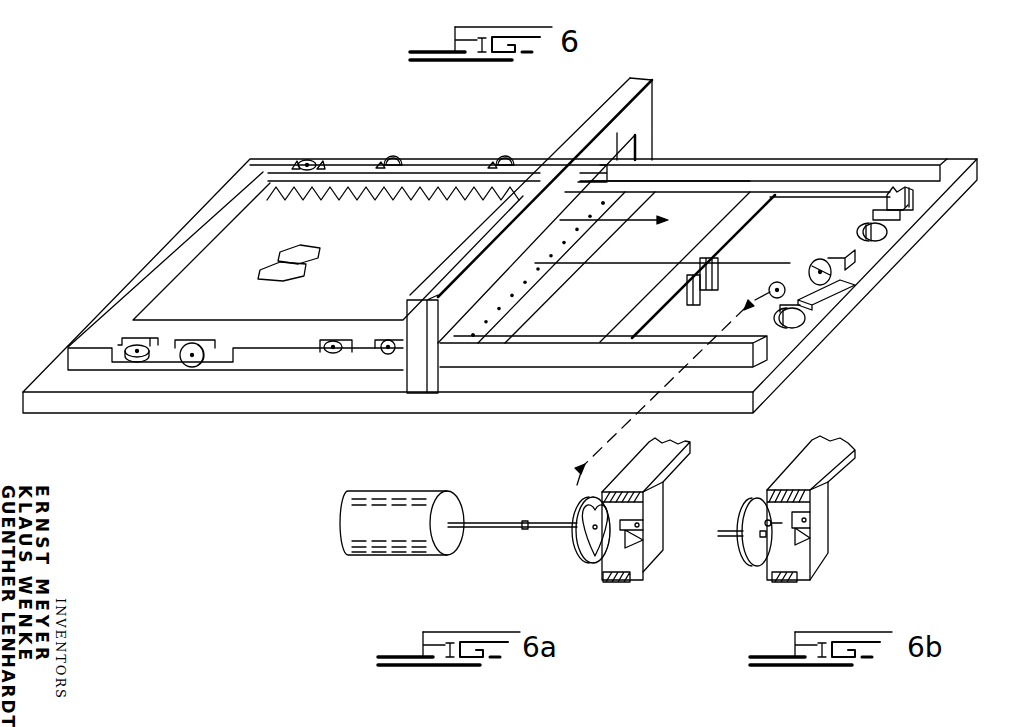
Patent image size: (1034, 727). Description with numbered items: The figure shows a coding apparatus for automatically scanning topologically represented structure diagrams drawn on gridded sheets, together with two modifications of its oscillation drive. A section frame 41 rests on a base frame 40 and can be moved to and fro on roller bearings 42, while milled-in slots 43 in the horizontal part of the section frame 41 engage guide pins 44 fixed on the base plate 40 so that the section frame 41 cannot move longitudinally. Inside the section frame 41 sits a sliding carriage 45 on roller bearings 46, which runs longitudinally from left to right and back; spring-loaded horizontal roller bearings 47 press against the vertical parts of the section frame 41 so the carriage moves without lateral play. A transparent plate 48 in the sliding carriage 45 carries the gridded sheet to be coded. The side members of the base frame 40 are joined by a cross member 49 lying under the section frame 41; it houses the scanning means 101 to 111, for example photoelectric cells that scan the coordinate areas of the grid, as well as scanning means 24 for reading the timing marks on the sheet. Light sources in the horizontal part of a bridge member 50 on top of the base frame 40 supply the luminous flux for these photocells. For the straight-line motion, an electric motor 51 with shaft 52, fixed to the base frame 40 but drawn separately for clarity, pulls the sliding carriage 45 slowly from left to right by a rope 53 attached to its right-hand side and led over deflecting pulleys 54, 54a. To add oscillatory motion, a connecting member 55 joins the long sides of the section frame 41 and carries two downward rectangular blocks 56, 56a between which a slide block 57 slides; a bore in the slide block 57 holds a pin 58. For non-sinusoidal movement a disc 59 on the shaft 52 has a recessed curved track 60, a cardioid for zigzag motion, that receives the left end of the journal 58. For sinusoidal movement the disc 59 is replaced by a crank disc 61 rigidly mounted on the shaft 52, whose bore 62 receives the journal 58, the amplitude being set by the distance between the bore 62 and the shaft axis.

In FIG. 6, the scanning means 24 is at (603, 203).
In FIG. 6, the base frame 40 is at (960, 206).
In FIG. 6, the section frame 41 is at (932, 168).
In FIG. 6, the roller bearings 42 is at (887, 232).
In FIG. 6, the milled-in slots 43 is at (897, 188).
In FIG. 6, the guide pins 44 is at (907, 192).
In FIG. 6, the sliding carriage 45 is at (426, 172).
In FIG. 6, the rollers 46 is at (390, 158).
In FIG. 6, the roller bearings 47 is at (312, 160).
In FIG. 6, the transparent plate 48 is at (245, 240).
In FIG. 6, the cross member 49 is at (613, 207).
In FIG. 6, the bridge member 50 is at (597, 119).
In FIG. 6a, the electric motor 51 is at (407, 505).
In FIG. 6a, the shaft 52 is at (497, 530).
In FIG. 6, the rope 53 is at (638, 267).
In FIG. 6a, the rope 53 is at (577, 485).
In FIG. 6, the deflecting pulley 54 is at (832, 278).
In FIG. 6, the deflecting pulley 54a is at (800, 303).
In FIG. 6, the connecting member 55 is at (743, 213).
In FIG. 6a, the connecting member 55 is at (655, 470).
In FIG. 6b, the connecting member 55 is at (836, 452).
In FIG. 6, the rectangular block 56 is at (718, 275).
In FIG. 6a, the rectangular block 56 is at (655, 506).
In FIG. 6b, the rectangular block 56 is at (822, 503).
In FIG. 6, the rectangular block 56a is at (693, 300).
In FIG. 6a, the slide block 57 is at (645, 522).
In FIG. 6b, the slide block 57 is at (806, 514).
In FIG. 6a, the pin 58 is at (630, 572).
In FIG. 6b, the pin 58 is at (774, 545).
In FIG. 6a, the disc 59 is at (592, 565).
In FIG. 6a, the curved track 60 is at (582, 546).
In FIG. 6b, the disc 61 is at (750, 545).
In FIG. 6b, the bore 62 is at (766, 520).
In FIG. 6, the scanning means 101 is at (526, 283).
In FIG. 6, the scanning means 111 is at (488, 322).